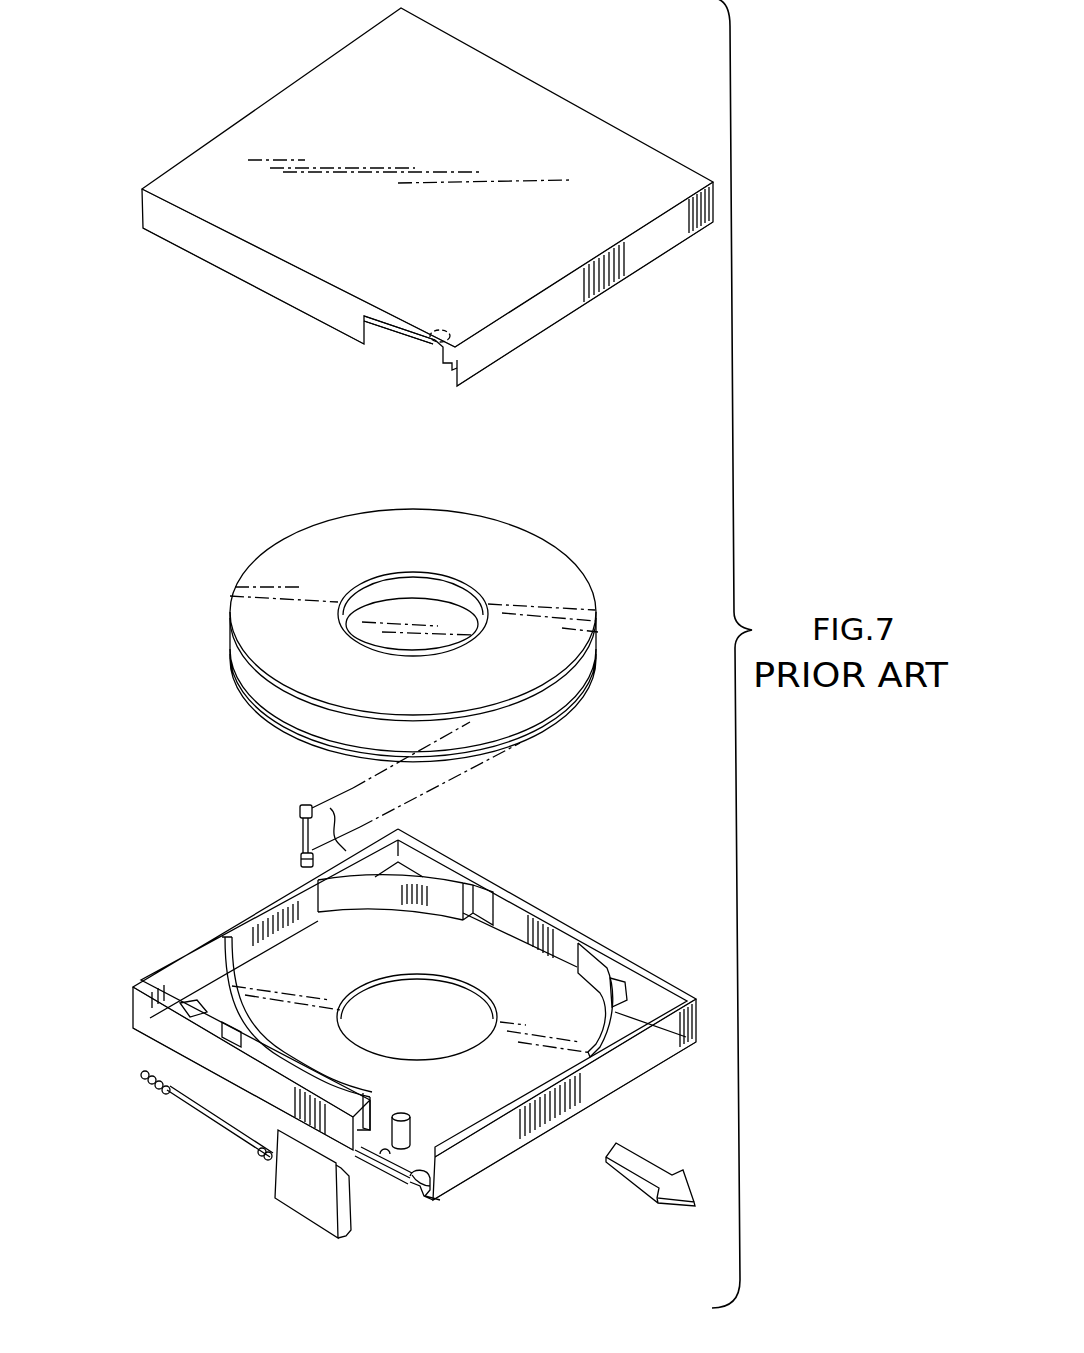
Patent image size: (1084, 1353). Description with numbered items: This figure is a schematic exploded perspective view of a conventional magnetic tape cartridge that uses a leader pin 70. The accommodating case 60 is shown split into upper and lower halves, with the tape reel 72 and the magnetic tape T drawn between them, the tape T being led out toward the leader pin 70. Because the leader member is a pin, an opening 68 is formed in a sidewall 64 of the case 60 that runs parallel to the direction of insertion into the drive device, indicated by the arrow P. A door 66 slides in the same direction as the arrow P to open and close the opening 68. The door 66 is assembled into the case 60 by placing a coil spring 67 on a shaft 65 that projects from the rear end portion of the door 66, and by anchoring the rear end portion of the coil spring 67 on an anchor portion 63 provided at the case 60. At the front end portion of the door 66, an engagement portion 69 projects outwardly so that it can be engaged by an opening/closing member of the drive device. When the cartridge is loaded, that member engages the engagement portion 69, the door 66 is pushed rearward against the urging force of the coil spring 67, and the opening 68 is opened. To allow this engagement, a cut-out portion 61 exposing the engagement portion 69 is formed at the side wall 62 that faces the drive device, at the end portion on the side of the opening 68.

The case 60 is at (634, 137).
The cut-out portion 61 is at (457, 1188).
The side wall 62 is at (579, 287).
The anchor portion 63 is at (215, 1013).
The sidewall 64 is at (266, 276).
The shaft 65 is at (166, 1117).
The door 66 is at (320, 1219).
The coil spring 67 is at (143, 1082).
The opening 68 is at (394, 325).
The engagement portion 69 is at (340, 1238).
The leader pin 70 is at (291, 816).
The tape reel 72 is at (559, 550).
The magnetic tape T is at (332, 808).
The direction of insertion P is at (659, 1188).